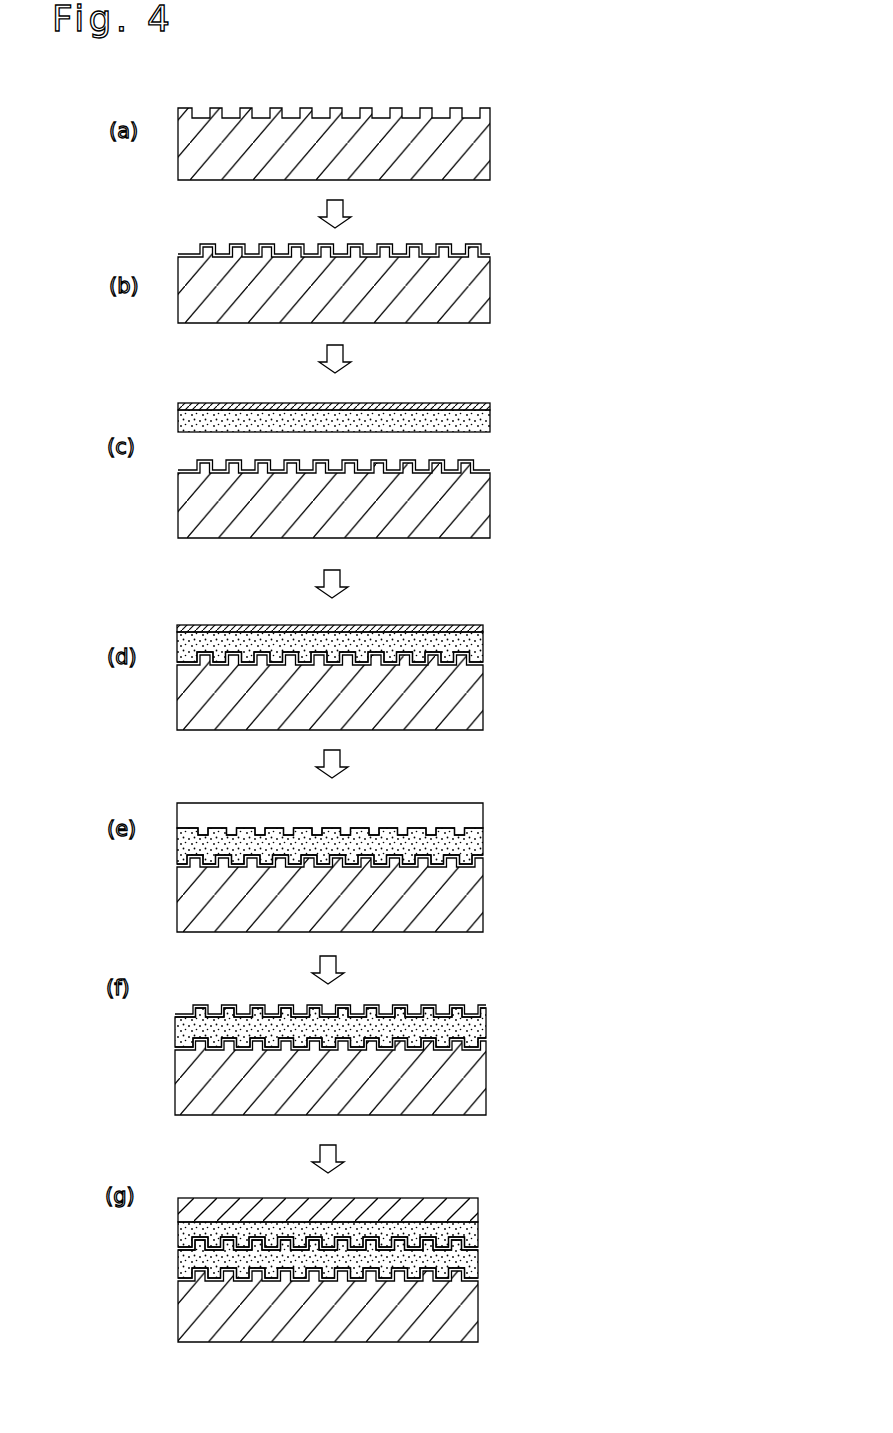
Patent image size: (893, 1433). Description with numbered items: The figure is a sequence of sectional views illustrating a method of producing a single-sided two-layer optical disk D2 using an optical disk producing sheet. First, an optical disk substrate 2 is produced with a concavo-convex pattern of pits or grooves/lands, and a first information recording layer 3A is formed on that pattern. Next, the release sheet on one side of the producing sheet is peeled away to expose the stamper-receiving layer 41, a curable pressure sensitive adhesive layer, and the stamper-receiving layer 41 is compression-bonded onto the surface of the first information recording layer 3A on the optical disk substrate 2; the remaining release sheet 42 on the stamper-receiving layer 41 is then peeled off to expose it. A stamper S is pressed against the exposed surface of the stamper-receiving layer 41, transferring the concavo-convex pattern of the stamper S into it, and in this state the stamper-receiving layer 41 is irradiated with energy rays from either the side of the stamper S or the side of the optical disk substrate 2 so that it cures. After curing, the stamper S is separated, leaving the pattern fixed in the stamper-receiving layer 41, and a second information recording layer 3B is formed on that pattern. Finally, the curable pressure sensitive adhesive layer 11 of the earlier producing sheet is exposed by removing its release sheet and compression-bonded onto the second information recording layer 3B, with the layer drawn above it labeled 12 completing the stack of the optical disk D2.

The optical disk substrate 2 is at (490, 149).
The first information recording layer 3A is at (428, 247).
The second information recording layer 3B is at (428, 1007).
The stamper-receiving layer 41 is at (488, 423).
The release sheet 42 is at (468, 404).
The stamper S is at (466, 805).
The cover layer 12 is at (458, 1198).
The curable pressure sensitive adhesive layer 11 is at (478, 1228).
The optical disk D2 is at (202, 1195).